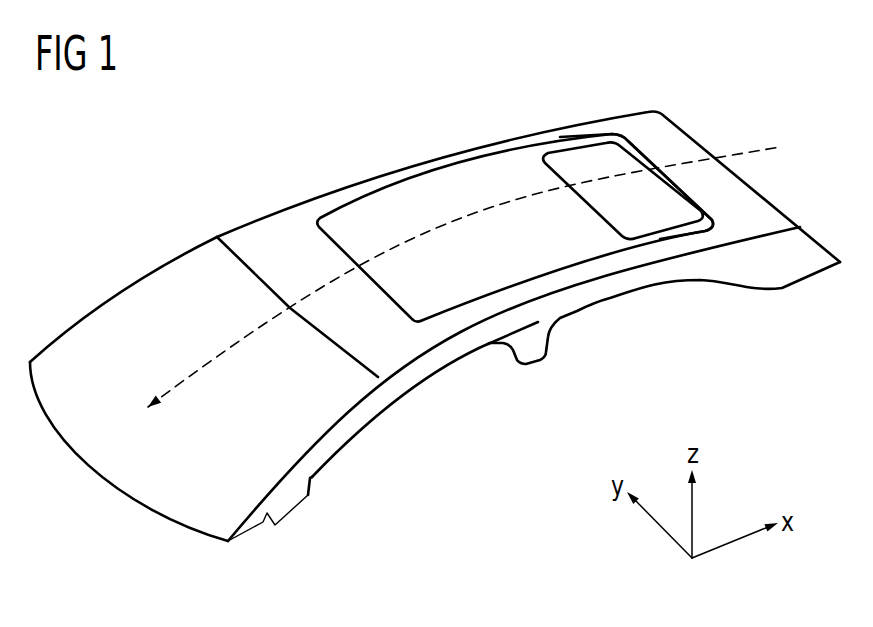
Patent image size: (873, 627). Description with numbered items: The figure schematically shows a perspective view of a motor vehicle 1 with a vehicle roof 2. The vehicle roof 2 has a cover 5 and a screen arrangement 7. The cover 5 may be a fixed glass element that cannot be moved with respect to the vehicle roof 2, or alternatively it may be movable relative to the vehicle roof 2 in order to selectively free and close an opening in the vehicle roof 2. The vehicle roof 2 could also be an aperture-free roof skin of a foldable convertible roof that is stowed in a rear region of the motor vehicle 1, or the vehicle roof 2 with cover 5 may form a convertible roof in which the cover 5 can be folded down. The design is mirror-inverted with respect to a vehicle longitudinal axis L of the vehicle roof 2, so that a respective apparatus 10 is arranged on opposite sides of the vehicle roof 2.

The motor vehicle 1 is at (165, 158).
The vehicle roof 2 is at (640, 122).
The cover 5 is at (378, 205).
The screen arrangement 7 is at (668, 202).
The apparatus 10 is at (551, 118).
The vehicle longitudinal axis L is at (752, 150).